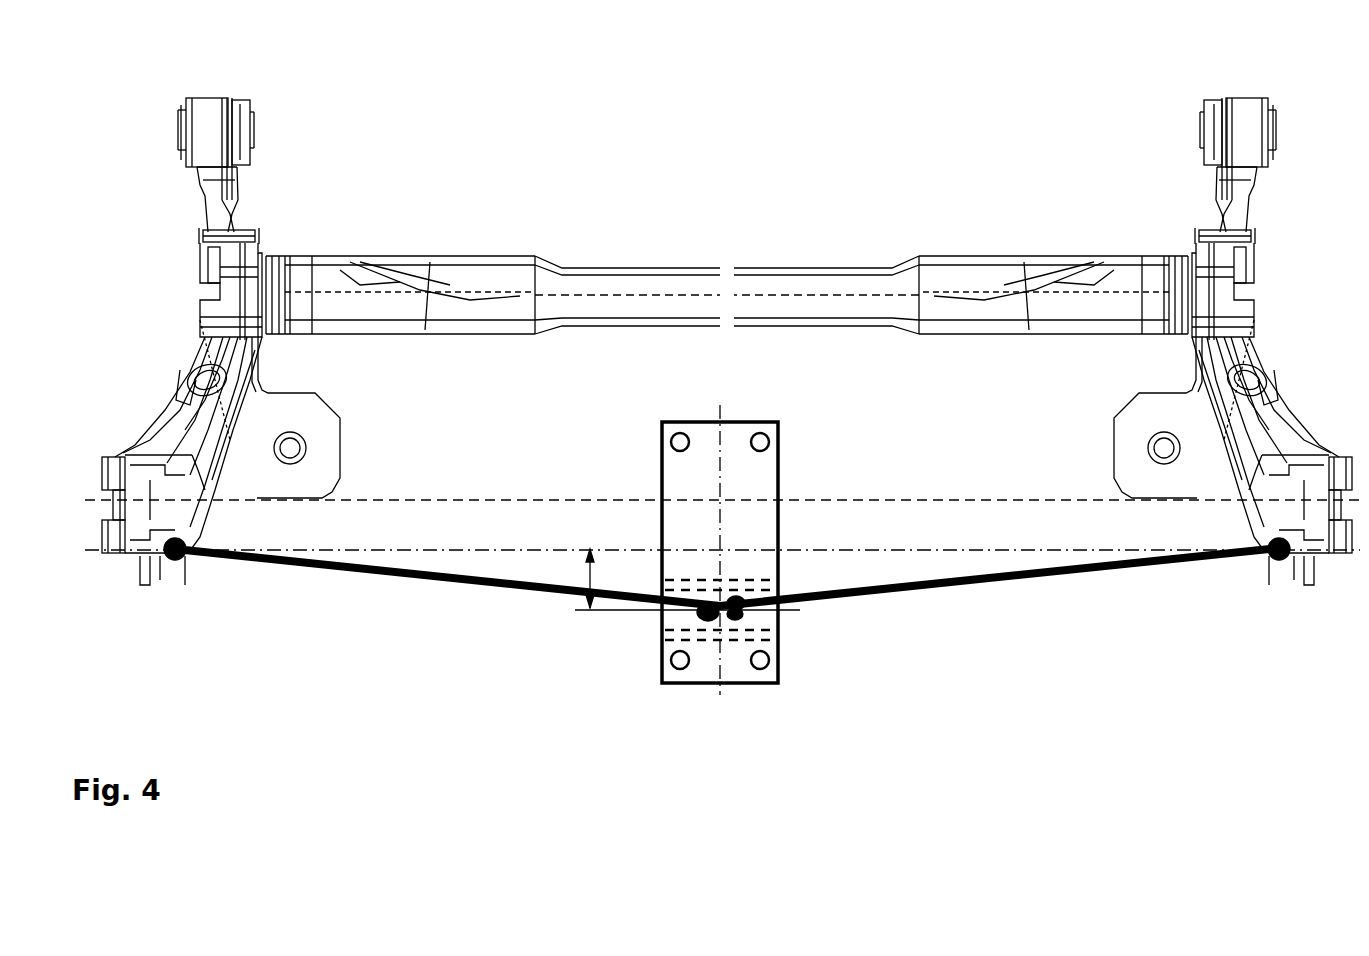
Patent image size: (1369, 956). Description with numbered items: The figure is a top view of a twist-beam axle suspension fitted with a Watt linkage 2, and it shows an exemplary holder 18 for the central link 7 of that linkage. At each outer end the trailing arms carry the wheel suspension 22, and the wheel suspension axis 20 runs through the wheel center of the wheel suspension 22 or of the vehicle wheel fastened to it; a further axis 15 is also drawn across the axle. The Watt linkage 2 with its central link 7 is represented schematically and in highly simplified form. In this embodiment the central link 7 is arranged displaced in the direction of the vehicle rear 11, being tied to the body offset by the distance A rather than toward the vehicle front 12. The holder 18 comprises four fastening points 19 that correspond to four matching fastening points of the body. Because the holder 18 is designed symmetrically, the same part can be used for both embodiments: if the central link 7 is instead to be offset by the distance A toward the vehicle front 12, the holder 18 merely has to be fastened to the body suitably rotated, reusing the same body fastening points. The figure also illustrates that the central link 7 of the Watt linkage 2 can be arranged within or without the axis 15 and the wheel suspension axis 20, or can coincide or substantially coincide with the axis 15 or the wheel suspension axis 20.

The Watt linkage 2 is at (470, 623).
The central link 7 is at (728, 624).
The vehicle rear 11 is at (744, 829).
The vehicle front 12 is at (744, 106).
The axis 15 is at (383, 548).
The holder 18 is at (690, 410).
The fastening points 19 is at (676, 434).
The wheel suspension axis 20 is at (920, 500).
The wheel suspension 22 is at (135, 572).
The distance A is at (576, 570).